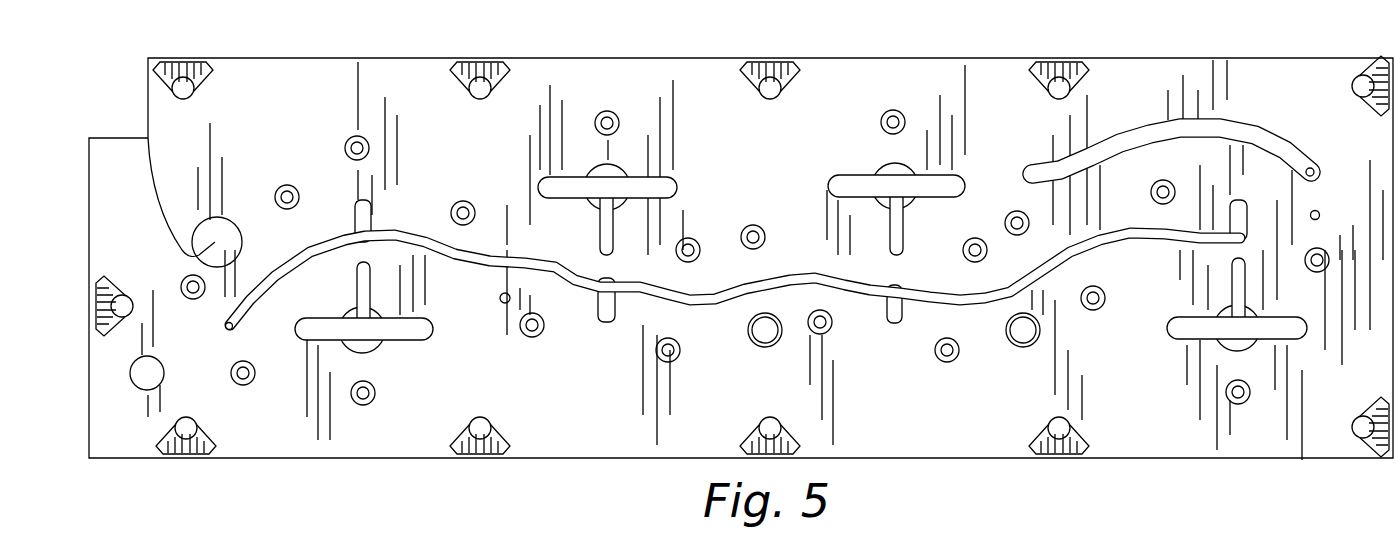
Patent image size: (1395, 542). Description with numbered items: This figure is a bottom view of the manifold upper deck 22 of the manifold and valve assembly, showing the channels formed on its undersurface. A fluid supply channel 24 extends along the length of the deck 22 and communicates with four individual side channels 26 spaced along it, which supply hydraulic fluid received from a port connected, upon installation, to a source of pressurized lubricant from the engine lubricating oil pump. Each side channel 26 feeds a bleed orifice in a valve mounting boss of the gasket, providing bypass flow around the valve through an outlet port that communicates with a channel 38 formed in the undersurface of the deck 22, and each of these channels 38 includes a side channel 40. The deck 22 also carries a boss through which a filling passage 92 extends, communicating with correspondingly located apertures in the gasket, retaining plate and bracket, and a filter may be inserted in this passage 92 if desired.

The upper deck 22 is at (450, 58).
The fluid supply channel 24 is at (978, 300).
The side channels 26 is at (352, 207).
The channel 38 is at (573, 186).
The side channel 40 is at (620, 227).
The filling passage 92 is at (148, 125).